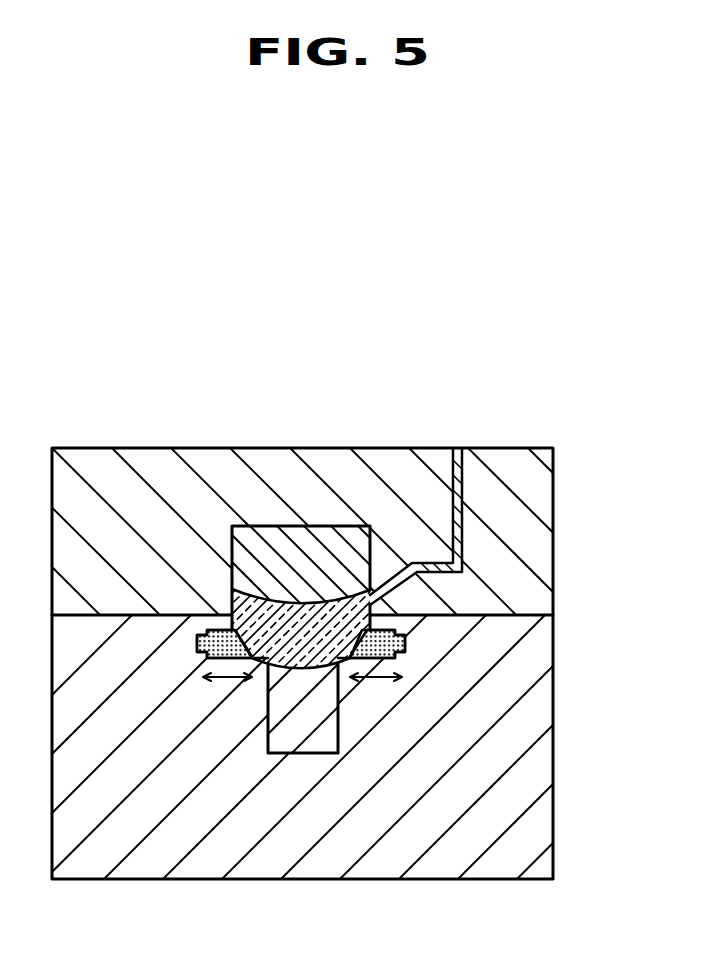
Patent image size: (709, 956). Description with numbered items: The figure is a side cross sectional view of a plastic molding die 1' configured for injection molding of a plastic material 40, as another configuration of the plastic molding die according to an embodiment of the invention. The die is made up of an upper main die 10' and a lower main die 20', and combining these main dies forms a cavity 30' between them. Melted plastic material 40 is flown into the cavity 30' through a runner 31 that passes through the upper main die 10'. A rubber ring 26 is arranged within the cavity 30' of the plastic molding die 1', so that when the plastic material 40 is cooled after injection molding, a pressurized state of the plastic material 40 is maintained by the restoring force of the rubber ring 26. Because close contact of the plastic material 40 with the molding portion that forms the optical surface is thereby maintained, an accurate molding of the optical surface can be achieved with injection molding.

The plastic molding die 1' is at (302, 560).
The upper main die 10' is at (352, 535).
The lower main die 20' is at (354, 747).
The rubber ring 26 is at (378, 650).
The cavity 30' is at (302, 700).
The runner 31 is at (456, 484).
The plastic material 40 is at (306, 645).